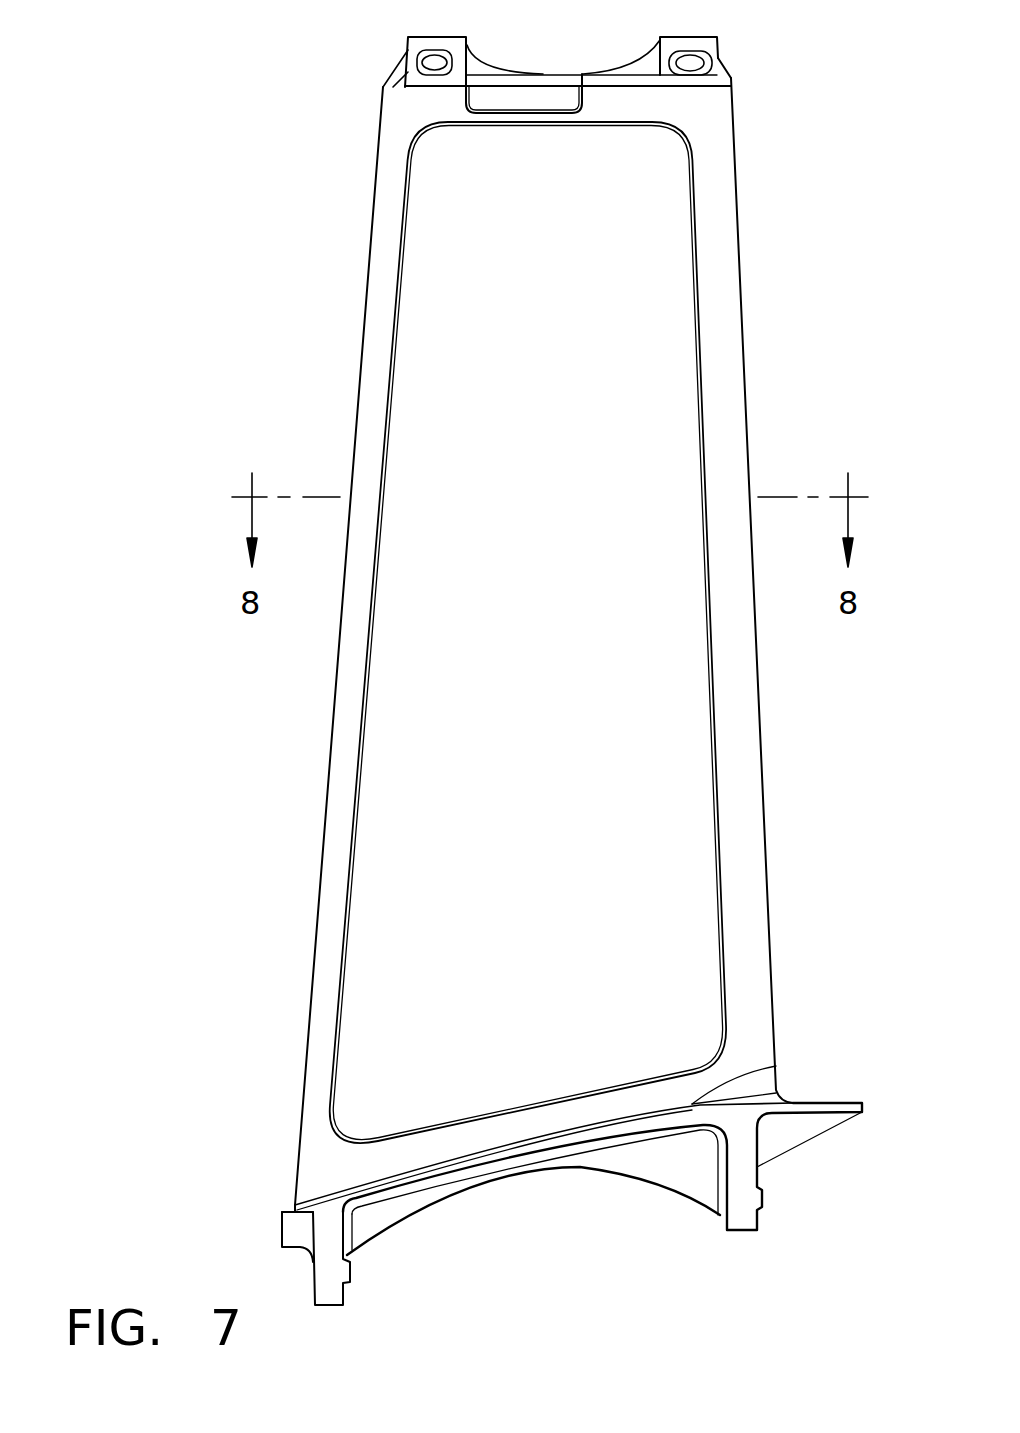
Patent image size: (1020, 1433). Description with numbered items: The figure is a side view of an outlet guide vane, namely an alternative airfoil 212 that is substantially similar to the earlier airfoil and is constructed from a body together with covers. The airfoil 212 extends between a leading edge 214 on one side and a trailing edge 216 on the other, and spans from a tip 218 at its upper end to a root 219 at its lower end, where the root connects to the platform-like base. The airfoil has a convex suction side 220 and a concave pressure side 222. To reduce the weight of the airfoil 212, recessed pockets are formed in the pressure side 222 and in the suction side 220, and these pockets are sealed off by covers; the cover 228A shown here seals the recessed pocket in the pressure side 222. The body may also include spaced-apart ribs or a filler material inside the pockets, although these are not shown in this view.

The airfoil 212 is at (712, 135).
The leading edge 214 is at (373, 204).
The trailing edge 216 is at (740, 215).
The tip 218 is at (597, 80).
The root 219 is at (775, 1066).
The convex suction side 220 is at (747, 985).
The concave pressure side 222 is at (317, 1077).
The cover 228A is at (587, 401).